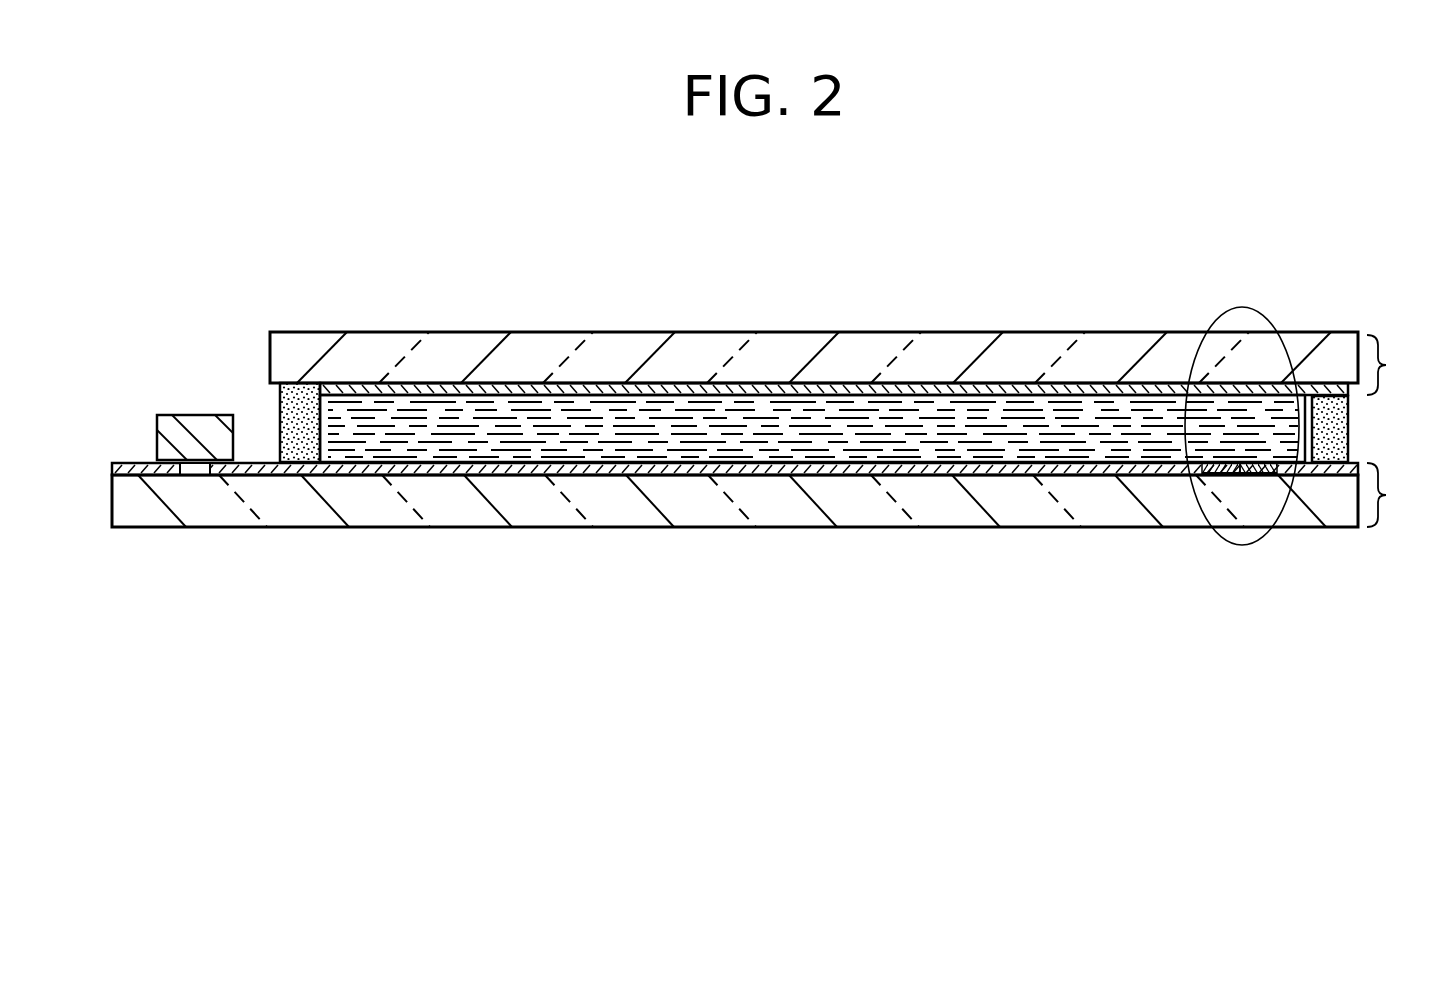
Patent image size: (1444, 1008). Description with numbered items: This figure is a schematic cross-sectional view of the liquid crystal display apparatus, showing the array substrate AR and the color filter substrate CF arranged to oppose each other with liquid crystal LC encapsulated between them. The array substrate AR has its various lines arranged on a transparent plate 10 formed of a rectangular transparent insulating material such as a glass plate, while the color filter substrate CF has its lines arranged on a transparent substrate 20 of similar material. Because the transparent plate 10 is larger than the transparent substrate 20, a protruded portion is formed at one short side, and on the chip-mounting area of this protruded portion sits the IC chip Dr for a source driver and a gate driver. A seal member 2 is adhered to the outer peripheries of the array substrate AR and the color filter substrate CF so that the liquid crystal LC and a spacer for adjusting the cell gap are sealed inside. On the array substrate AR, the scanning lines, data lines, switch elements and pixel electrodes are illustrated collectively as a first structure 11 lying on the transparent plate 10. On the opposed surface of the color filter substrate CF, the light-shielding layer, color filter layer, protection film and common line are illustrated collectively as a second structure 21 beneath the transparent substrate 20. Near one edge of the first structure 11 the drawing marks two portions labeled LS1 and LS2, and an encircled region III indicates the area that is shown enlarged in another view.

The seal member 2 is at (300, 383).
The transparent plate 10 is at (708, 495).
The first structure 11 is at (997, 475).
The transparent substrate 20 is at (983, 350).
The second structure 21 is at (867, 390).
The liquid crystal LC is at (550, 410).
The color filter substrate CF is at (1400, 365).
The array substrate AR is at (1401, 495).
The IC chip Dr is at (185, 467).
The first light shielding portion LS1 is at (1262, 475).
The second light shielding portion LS2 is at (1207, 475).
The region shown enlarged in FIG. 3 III is at (1243, 307).